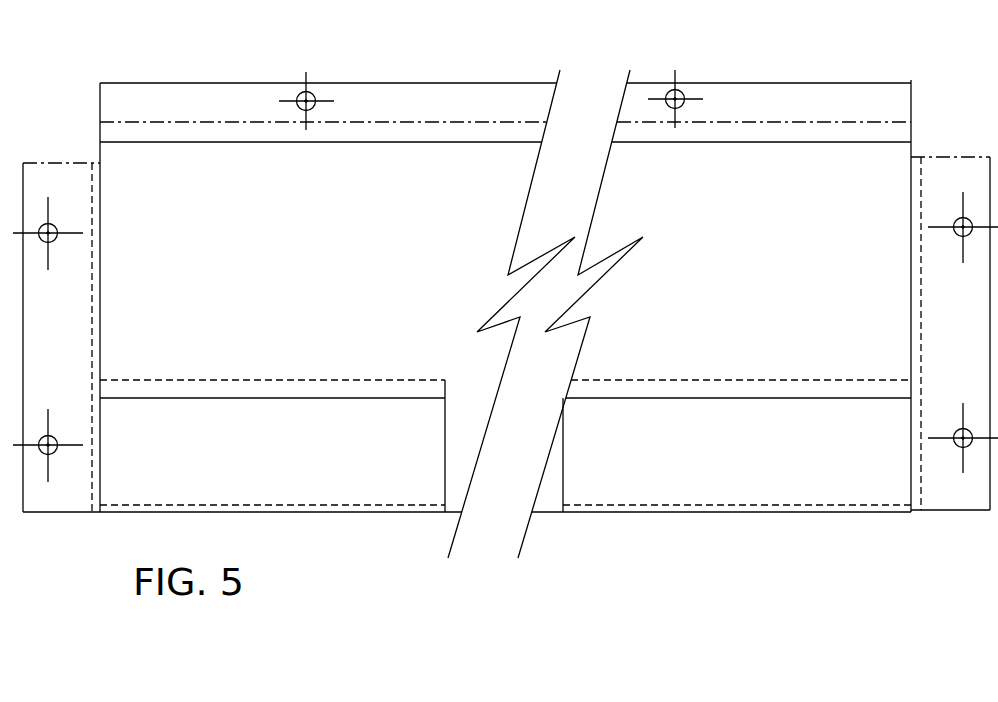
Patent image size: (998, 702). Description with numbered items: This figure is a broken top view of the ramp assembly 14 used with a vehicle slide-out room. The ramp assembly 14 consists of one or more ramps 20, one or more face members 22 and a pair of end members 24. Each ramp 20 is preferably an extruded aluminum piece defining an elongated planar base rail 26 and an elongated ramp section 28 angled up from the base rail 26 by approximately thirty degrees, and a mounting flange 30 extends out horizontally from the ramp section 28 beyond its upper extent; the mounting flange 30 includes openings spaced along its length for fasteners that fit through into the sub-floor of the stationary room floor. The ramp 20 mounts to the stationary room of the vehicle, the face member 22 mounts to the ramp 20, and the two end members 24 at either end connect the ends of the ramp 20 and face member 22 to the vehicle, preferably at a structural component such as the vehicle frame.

The ramp assembly 14 is at (478, 38).
The ramp 20 is at (118, 167).
The face member 22 is at (252, 466).
The end member 24 is at (63, 518).
The base rail 26 is at (75, 340).
The ramp section 28 is at (278, 236).
The mounting flange 30 is at (232, 112).